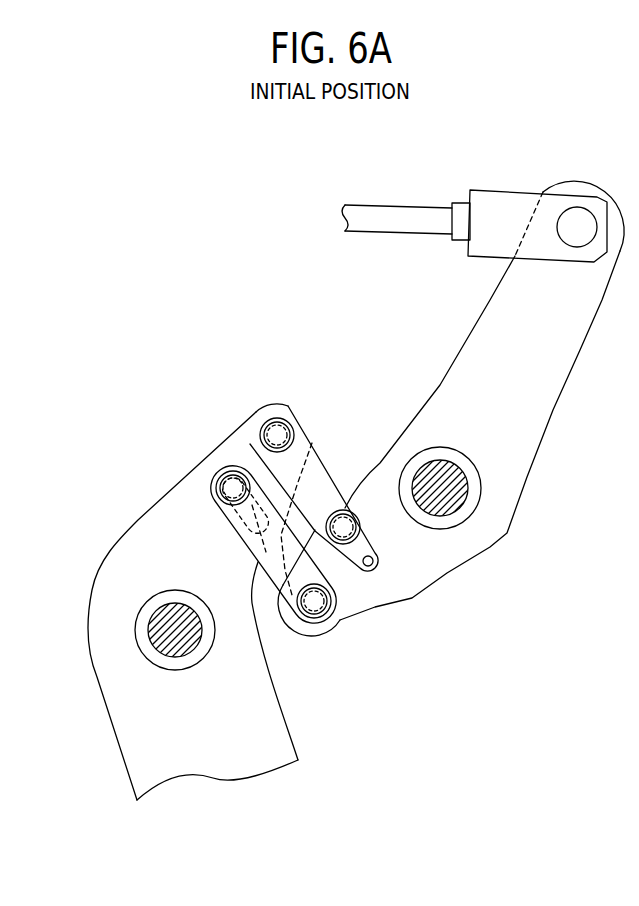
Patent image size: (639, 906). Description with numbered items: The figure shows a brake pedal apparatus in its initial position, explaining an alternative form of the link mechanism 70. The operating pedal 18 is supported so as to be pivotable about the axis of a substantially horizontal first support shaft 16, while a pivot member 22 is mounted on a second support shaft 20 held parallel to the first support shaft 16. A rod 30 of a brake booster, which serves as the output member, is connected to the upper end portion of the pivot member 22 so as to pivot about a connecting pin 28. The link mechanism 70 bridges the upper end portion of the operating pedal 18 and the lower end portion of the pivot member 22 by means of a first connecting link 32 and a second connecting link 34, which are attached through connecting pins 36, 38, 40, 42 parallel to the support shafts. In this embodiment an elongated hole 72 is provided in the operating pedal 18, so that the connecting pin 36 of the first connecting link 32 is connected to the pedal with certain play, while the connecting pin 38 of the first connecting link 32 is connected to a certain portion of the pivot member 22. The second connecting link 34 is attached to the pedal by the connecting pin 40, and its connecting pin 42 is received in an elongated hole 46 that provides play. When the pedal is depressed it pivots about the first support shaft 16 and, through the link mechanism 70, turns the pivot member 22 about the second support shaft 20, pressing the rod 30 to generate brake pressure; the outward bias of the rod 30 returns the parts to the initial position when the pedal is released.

The first support shaft 16 is at (157, 622).
The operating pedal 18 is at (212, 763).
The second support shaft 20 is at (455, 500).
The pivot member 22 is at (568, 337).
The connecting pin 28 is at (573, 220).
The rod 30 is at (392, 222).
The first connecting link 32 is at (278, 562).
The second connecting link 34 is at (312, 462).
The connecting pin 36 is at (232, 482).
The connecting pin 38 is at (318, 607).
The connecting pin 40 is at (280, 428).
The connecting pin 42 is at (341, 520).
The elongated hole 46 is at (366, 568).
The link mechanism 70 is at (243, 401).
The elongated hole 72 is at (228, 512).